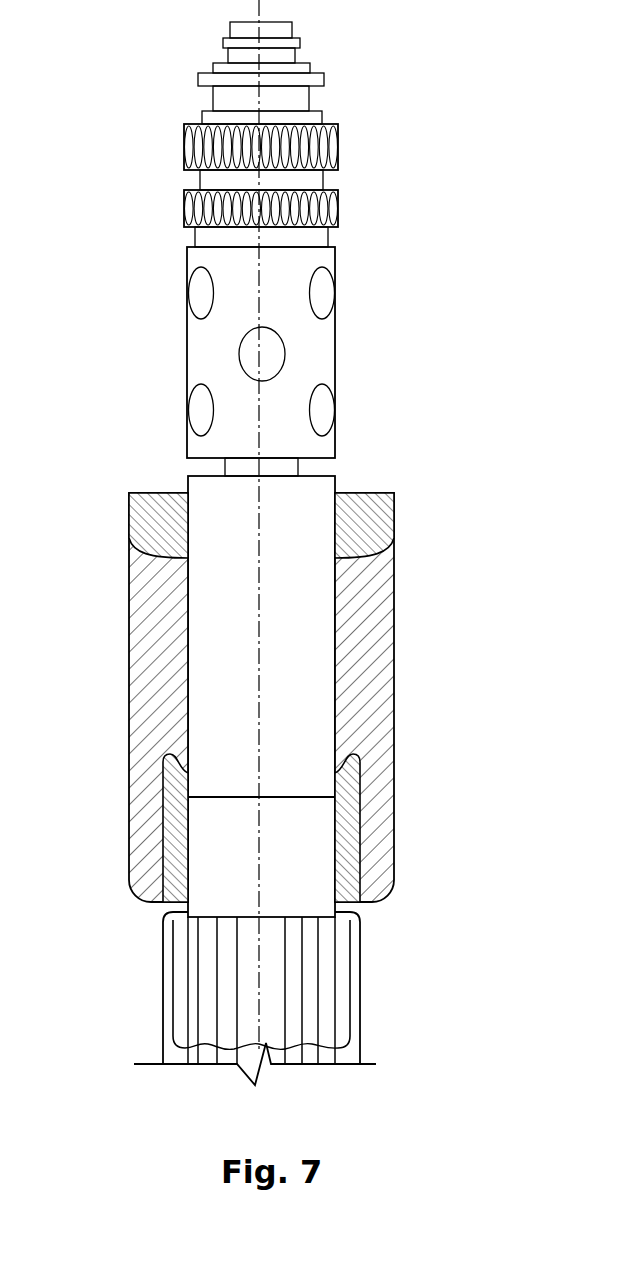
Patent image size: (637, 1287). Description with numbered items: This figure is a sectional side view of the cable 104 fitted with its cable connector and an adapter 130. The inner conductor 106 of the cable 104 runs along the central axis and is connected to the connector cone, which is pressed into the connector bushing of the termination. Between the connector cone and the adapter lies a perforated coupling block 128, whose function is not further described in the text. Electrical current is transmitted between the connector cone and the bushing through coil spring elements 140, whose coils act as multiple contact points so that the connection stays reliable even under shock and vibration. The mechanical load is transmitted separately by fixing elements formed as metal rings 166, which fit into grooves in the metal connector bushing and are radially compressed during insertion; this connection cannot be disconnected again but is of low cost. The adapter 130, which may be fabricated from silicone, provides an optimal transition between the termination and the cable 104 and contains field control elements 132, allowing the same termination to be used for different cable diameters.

The metal rings 166 is at (301, 43).
The coil spring 140 is at (338, 147).
The coupling block 128 is at (314, 357).
The inner conductor 106 is at (242, 469).
The adapter 130 is at (372, 653).
The field control elements 132 is at (349, 818).
The cable 104 is at (162, 987).